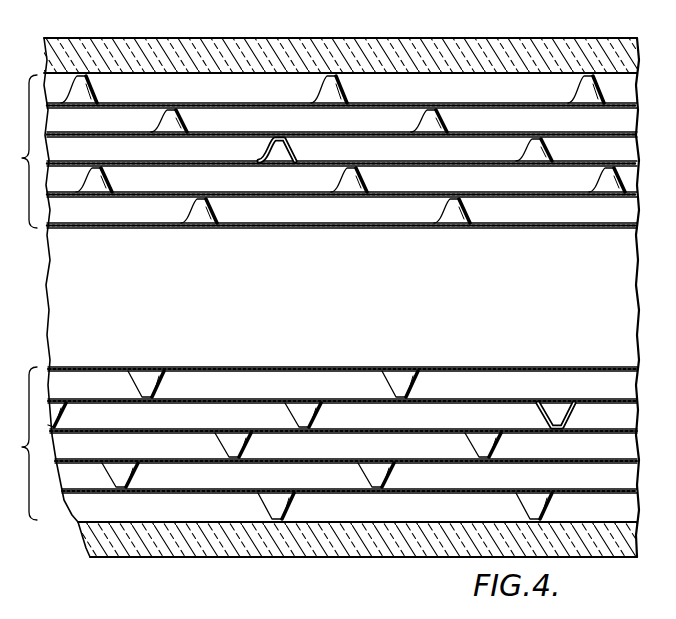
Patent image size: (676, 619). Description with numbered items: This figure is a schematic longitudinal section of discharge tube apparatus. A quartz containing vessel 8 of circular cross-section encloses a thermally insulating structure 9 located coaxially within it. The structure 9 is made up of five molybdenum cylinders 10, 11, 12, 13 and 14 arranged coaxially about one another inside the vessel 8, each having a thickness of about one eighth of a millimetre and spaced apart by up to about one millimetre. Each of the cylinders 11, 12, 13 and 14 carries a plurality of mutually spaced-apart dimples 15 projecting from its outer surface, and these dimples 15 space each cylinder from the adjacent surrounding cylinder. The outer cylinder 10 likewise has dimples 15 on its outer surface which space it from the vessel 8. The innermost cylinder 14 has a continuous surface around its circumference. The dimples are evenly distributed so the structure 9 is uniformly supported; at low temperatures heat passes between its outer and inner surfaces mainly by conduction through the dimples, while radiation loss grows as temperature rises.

The quartz containing vessel 8 is at (470, 53).
The thermally insulating structure 9 is at (322, 262).
The outer cylinder 10 is at (134, 103).
The cylinder 11 is at (210, 133).
The cylinder 12 is at (238, 161).
The cylinder 13 is at (318, 193).
The innermost cylinder 14 is at (268, 228).
The dimples 15 is at (398, 388).